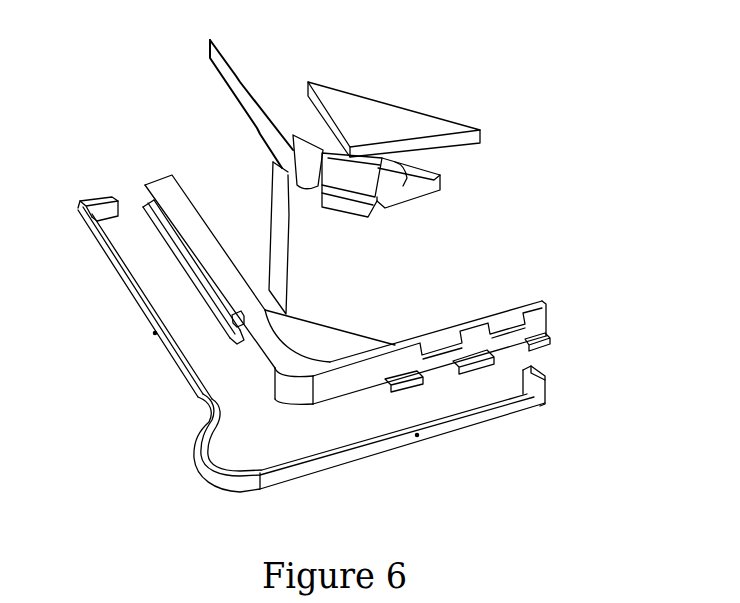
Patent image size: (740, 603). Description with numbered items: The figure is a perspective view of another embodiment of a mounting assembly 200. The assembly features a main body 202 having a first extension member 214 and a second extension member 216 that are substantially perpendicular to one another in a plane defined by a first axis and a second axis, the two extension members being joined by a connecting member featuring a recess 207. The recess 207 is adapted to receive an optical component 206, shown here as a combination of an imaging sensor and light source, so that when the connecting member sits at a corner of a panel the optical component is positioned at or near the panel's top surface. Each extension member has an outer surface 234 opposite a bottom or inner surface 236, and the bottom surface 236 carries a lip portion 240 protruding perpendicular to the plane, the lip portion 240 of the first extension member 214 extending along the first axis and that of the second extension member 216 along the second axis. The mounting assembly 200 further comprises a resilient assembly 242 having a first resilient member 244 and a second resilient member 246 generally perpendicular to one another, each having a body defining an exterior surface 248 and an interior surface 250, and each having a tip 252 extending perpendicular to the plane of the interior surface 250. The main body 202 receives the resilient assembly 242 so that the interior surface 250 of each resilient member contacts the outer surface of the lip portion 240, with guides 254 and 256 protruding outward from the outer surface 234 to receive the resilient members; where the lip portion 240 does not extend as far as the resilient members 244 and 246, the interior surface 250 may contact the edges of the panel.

The mounting assembly 200 is at (500, 68).
The main body 202 is at (208, 207).
The optical component 206 is at (357, 116).
The recess 207 is at (323, 340).
The first extension member 214 is at (212, 246).
The second extension member 216 is at (548, 310).
The outer surface 234 is at (549, 320).
The bottom surface 236 is at (284, 401).
The lip portion 240 is at (356, 383).
The resilient assembly 242 is at (290, 470).
The first resilient member 244 is at (108, 264).
The second resilient member 246 is at (483, 423).
The exterior surface 248 is at (155, 334).
The interior surface 250 is at (142, 306).
The tip 252 is at (108, 200).
The guide 254 is at (437, 340).
The guide 256 is at (236, 327).